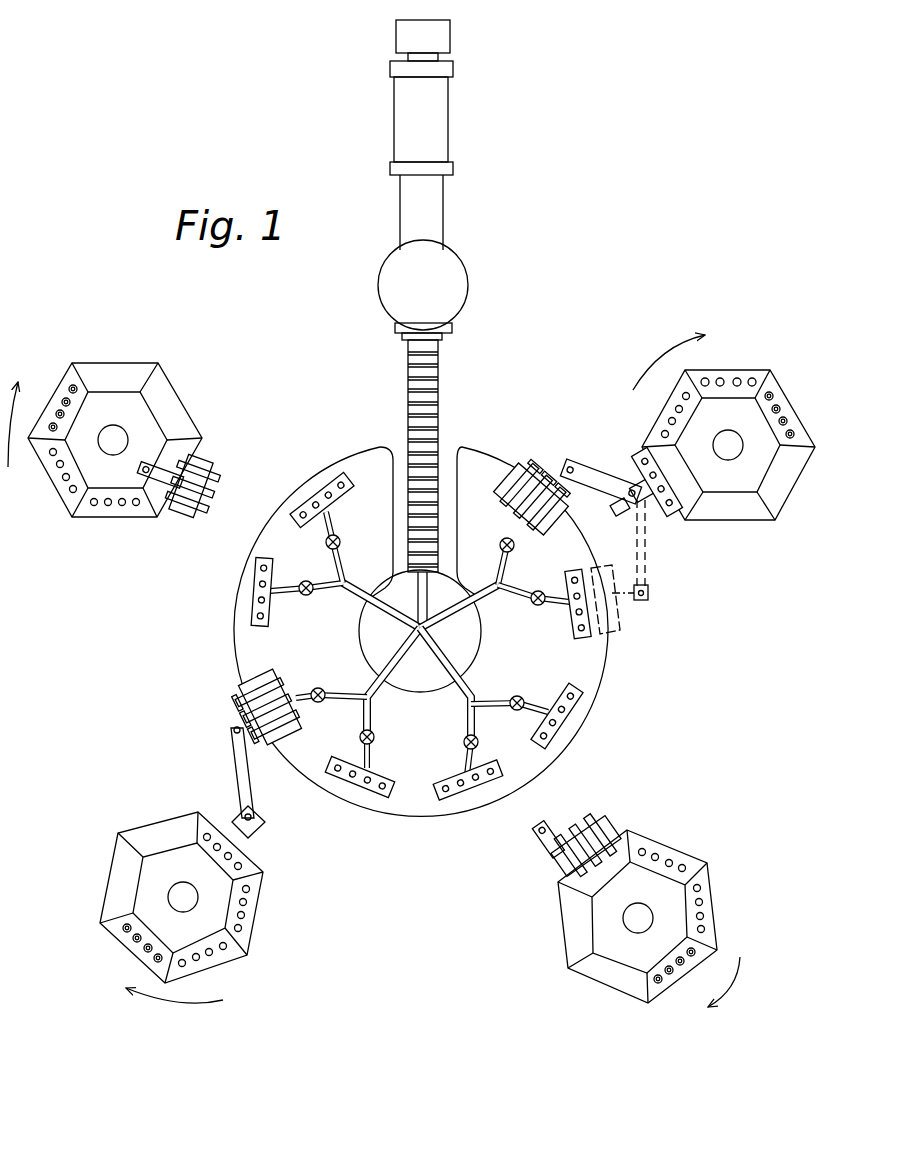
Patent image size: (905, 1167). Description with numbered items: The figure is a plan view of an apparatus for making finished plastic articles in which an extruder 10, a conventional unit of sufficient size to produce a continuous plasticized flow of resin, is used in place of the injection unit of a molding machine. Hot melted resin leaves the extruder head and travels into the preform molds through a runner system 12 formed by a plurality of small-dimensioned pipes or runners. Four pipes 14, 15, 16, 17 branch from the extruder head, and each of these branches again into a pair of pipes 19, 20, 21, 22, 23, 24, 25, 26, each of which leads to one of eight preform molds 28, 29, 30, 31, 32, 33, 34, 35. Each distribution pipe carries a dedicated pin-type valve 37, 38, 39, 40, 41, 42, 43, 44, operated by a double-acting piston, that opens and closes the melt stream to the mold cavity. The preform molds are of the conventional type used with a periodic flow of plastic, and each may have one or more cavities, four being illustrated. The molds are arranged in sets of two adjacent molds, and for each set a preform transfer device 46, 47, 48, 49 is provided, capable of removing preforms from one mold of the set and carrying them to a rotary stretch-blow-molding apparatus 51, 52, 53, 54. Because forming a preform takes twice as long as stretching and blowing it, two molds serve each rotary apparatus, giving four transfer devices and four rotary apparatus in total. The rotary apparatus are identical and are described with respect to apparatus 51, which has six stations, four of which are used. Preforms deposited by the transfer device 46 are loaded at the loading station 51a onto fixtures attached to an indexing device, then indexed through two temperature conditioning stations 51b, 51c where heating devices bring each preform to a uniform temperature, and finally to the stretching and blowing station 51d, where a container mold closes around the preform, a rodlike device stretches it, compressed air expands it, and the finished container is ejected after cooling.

The extruder 10 is at (445, 400).
The runner system 12 is at (411, 608).
The pipe 14 is at (437, 607).
The pipe 15 is at (446, 652).
The pipe 16 is at (397, 657).
The pipe 17 is at (395, 619).
The pipe 19 is at (496, 568).
The pipe 20 is at (562, 610).
The pipe 21 is at (541, 700).
The pipe 22 is at (466, 770).
The pipe 23 is at (373, 766).
The pipe 24 is at (296, 695).
The pipe 25 is at (326, 596).
The pipe 26 is at (340, 524).
The preform mold 28 is at (497, 486).
The preform mold 29 is at (598, 648).
The preform mold 30 is at (565, 728).
The preform mold 31 is at (464, 800).
The preform mold 32 is at (378, 798).
The preform mold 33 is at (240, 684).
The preform mold 34 is at (252, 612).
The preform mold 35 is at (322, 485).
The valve 37 is at (504, 538).
The valve 38 is at (533, 606).
The valve 39 is at (519, 696).
The valve 40 is at (479, 742).
The valve 41 is at (375, 737).
The valve 42 is at (318, 704).
The valve 43 is at (305, 580).
The valve 44 is at (341, 542).
The preform transfer device 46 is at (600, 465).
The preform transfer device 47 is at (594, 812).
The preform transfer device 48 is at (232, 773).
The preform transfer device 49 is at (218, 470).
The rotary stretch-blow-molding apparatus 51 is at (721, 442).
The loading station 51a is at (690, 492).
The temperature conditioning station 51b is at (668, 420).
The temperature conditioning station 51c is at (724, 373).
The stretching and blowing station 51d is at (782, 410).
The rotary stretch-blow-molding apparatus 52 is at (666, 835).
The rotary stretch-blow-molding apparatus 53 is at (229, 968).
The rotary stretch-blow-molding apparatus 54 is at (62, 510).